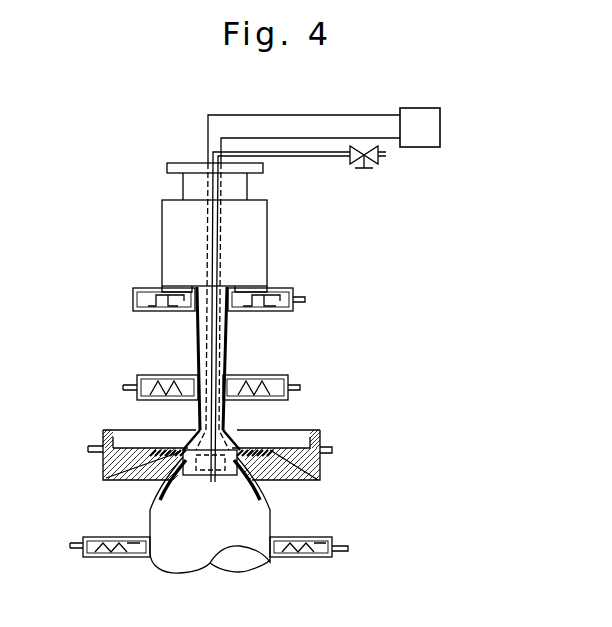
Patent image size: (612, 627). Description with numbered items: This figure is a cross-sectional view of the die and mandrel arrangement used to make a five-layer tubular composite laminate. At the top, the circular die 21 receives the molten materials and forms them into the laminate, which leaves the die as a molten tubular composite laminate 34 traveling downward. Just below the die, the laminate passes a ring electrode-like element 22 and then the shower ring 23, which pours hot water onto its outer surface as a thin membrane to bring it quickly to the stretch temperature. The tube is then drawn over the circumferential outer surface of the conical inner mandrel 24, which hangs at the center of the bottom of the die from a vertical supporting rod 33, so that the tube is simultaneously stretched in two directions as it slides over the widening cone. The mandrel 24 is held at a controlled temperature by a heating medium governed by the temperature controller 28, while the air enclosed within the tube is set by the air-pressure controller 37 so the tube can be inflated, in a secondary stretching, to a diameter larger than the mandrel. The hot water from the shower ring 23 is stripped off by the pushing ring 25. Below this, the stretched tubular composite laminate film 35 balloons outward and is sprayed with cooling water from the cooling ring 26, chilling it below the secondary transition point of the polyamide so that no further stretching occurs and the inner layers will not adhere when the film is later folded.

The circular die 21 is at (267, 232).
The upper electrode 22 is at (291, 289).
The shower ring 23 is at (285, 377).
The conical inner mandrel 24 is at (226, 447).
The pushing ring 25 is at (321, 474).
The cooling ring 26 is at (318, 540).
The temperature controller 28 is at (428, 121).
The vertical supporting rod 33 is at (213, 342).
The molten tubular composite laminate 34 is at (186, 352).
The stretched tubular composite laminate film 35 is at (142, 507).
The air-pressure controller 37 is at (381, 163).